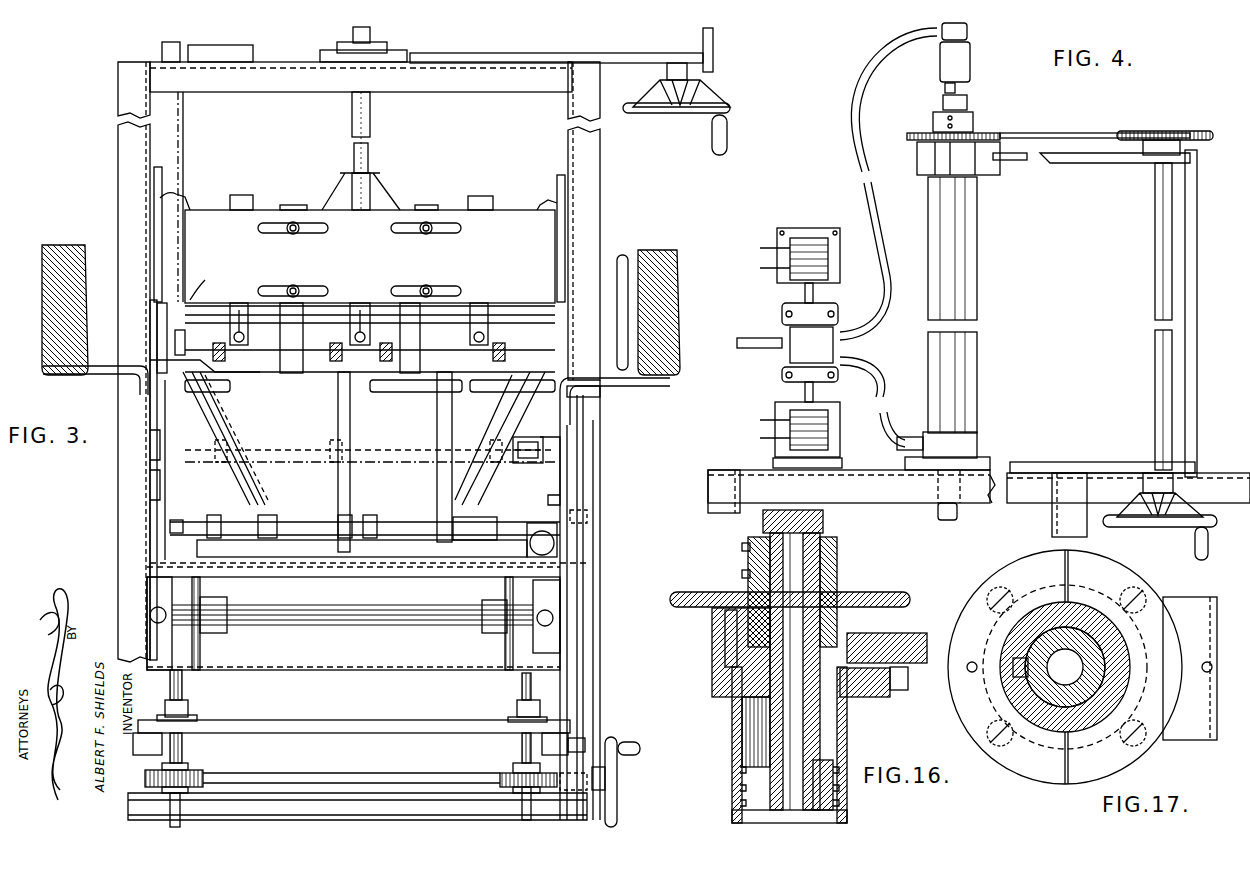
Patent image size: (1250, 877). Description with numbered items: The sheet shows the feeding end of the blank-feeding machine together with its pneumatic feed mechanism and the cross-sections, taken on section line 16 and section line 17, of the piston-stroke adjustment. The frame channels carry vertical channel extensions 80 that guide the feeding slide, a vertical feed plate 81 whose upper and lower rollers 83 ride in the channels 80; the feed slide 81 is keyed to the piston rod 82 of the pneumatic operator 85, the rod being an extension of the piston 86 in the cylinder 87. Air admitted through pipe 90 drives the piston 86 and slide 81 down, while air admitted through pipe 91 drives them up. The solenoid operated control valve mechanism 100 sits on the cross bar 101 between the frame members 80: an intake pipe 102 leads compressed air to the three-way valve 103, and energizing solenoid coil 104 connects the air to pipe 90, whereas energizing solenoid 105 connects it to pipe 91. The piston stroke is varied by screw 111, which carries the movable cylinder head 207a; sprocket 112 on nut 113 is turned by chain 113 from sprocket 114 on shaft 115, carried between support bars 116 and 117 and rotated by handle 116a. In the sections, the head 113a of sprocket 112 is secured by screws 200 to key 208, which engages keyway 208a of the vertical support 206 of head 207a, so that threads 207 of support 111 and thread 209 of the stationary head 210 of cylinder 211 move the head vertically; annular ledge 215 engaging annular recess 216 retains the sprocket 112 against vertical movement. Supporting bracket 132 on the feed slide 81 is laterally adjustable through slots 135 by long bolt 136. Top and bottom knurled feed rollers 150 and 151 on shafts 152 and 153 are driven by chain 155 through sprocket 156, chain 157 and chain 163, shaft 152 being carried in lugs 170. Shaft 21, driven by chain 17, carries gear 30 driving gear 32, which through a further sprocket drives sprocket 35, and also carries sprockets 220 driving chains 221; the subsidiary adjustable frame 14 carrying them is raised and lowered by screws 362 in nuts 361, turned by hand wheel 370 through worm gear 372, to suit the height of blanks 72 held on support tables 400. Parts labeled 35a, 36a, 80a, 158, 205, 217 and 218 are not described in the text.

In FIG. 3, the subsidiary adjustable frame 14 is at (600, 660).
In FIG. 4, the section line 16— 16 is at (945, 88).
In FIG. 16, the chain 17 is at (685, 628).
In FIG. 3, the shaft 21 is at (347, 615).
In FIG. 3, the gear 30 is at (583, 604).
In FIG. 3, the gear 32 is at (590, 518).
In FIG. 3, the sprocket 35 is at (600, 450).
In FIG. 3, the side frame flange 35a is at (570, 410).
In FIG. 3, the frame plate 36a is at (603, 490).
In FIG. 3, the blanks 72 is at (70, 250).
In FIG. 3, the vertical channel extensions 80 is at (160, 175).
In FIG. 3, the upright post 80a is at (124, 143).
In FIG. 4, the upright post 80a is at (712, 497).
In FIG. 3, the vertical feed plate 81 is at (508, 228).
In FIG. 3, the piston rod 82 is at (370, 158).
In FIG. 4, the piston rod 82 is at (947, 521).
In FIG. 3, the rollers 83 is at (165, 203).
In FIG. 4, the pneumatic operator 85 is at (991, 249).
In FIG. 16, the pneumatic operator 85 is at (847, 730).
In FIG. 3, the piston 86 is at (352, 36).
In FIG. 4, the piston 86 is at (980, 468).
In FIG. 3, the cylinder 87 is at (380, 44).
In FIG. 4, the cylinder 87 is at (977, 350).
In FIG. 4, the pipe 90 is at (855, 133).
In FIG. 4, the pipe 91 is at (885, 438).
In FIG. 4, the solenoid operated control valve mechanism 100 is at (768, 358).
In FIG. 3, the cross bar 101 is at (280, 70).
In FIG. 4, the cross bar 101 is at (750, 475).
In FIG. 4, the intake pipe 102 is at (750, 338).
In FIG. 4, the three-way valve 103 is at (810, 342).
In FIG. 4, the solenoid coil 104 is at (815, 240).
In FIG. 4, the solenoid 105 is at (828, 430).
In FIG. 4, the screw 111 is at (968, 100).
In FIG. 16, the screw 111 is at (823, 522).
In FIG. 17, the screw 111 is at (1115, 648).
In FIG. 4, the sprocket 112 is at (993, 132).
In FIG. 16, the sprocket 112 is at (890, 594).
In FIG. 4, the chain 113 is at (1080, 133).
In FIG. 4, the head 113a is at (933, 120).
In FIG. 16, the head 113a is at (750, 553).
In FIG. 4, the sprocket 114 is at (1203, 131).
In FIG. 4, the shaft 115 is at (1160, 222).
In FIG. 3, the support bar 116 is at (638, 40).
In FIG. 4, the support bar 116 is at (1115, 465).
In FIG. 3, the handle 116a is at (730, 106).
In FIG. 4, the handle 116a is at (1152, 528).
In FIG. 4, the support bar 117 is at (1083, 164).
In FIG. 3, the supporting bracket 132 is at (305, 197).
In FIG. 3, the slots 135 is at (318, 284).
In FIG. 3, the long bolt 136 is at (290, 285).
In FIG. 3, the top knurled feed rollers 150 is at (218, 362).
In FIG. 3, the bottom knurled feed rollers 151 is at (220, 440).
In FIG. 3, the shaft 152 is at (318, 370).
In FIG. 3, the shaft 153 is at (404, 458).
In FIG. 3, the chain 155 is at (595, 428).
In FIG. 3, the sprocket 156 is at (530, 463).
In FIG. 3, the chain 157 is at (184, 122).
In FIG. 3, the bracket 158 is at (176, 336).
In FIG. 3, the chain 163 is at (202, 281).
In FIG. 3, the lugs 170 is at (165, 362).
In FIG. 3, the screws 200 is at (248, 207).
In FIG. 16, the sleeve 205 is at (740, 705).
In FIG. 16, the vertical support 206 is at (810, 560).
In FIG. 17, the vertical support 206 is at (1055, 705).
In FIG. 16, the threads 207 is at (820, 752).
In FIG. 17, the threads 207 is at (1083, 735).
In FIG. 16, the cylinder head 207a is at (825, 775).
In FIG. 16, the key 208 is at (750, 590).
In FIG. 17, the key 208 is at (951, 712).
In FIG. 16, the keyway 208a is at (760, 738).
In FIG. 16, the thread 209 is at (848, 697).
In FIG. 16, the top closure member 210 is at (714, 665).
In FIG. 16, the cylinder 211 is at (840, 815).
In FIG. 16, the annular ledge 215 is at (850, 600).
In FIG. 17, the annular ledge 215 is at (980, 602).
In FIG. 16, the annular recess 216 is at (885, 640).
In FIG. 17, the annular recess 216 is at (1080, 612).
In FIG. 16, the bolt 217 is at (730, 630).
In FIG. 17, the bolt 217 is at (1045, 600).
In FIG. 16, the screw 218 is at (722, 615).
In FIG. 17, the screw 218 is at (1145, 592).
In FIG. 3, the sprockets 220 is at (225, 630).
In FIG. 3, the chains 221 is at (198, 670).
In FIG. 3, the nuts 361 is at (190, 708).
In FIG. 3, the longitudinal screw 362 is at (183, 685).
In FIG. 3, the hand wheel 370 is at (617, 808).
In FIG. 3, the worm gear 372 is at (200, 772).
In FIG. 3, the support platforms 400 is at (55, 376).